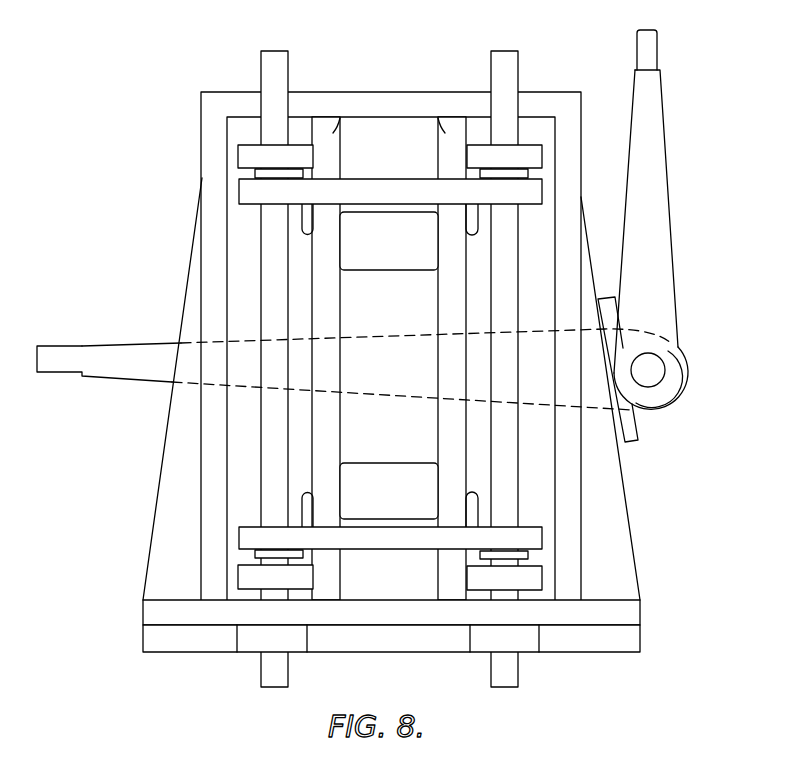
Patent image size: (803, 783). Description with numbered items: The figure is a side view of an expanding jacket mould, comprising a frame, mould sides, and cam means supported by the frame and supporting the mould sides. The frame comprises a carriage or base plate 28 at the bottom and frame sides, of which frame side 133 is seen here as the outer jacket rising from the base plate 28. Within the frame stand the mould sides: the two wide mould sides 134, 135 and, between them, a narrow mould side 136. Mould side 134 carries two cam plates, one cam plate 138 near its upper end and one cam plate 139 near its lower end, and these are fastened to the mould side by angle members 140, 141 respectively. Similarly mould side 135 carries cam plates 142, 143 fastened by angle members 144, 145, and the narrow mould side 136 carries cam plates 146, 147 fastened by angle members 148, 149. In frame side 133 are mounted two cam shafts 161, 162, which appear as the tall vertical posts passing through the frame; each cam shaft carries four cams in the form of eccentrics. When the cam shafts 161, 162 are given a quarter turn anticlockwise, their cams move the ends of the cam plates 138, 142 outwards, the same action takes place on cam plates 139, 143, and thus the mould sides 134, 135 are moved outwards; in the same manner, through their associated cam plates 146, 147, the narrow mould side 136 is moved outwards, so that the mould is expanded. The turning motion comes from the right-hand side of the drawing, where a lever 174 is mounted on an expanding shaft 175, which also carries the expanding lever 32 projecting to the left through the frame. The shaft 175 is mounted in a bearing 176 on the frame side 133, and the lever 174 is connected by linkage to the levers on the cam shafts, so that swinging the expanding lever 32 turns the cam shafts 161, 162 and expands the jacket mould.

The carriage or base plate 28 is at (627, 638).
The expanding lever 32 is at (103, 368).
The frame side 133 is at (416, 103).
The wide mould side 134 is at (325, 127).
The wide mould side 135 is at (457, 130).
The narrow mould side 136 is at (387, 128).
The cam plate 138 is at (308, 158).
The cam plate 139 is at (245, 572).
The angle member 140 is at (256, 180).
The angle member 141 is at (254, 551).
The cam plate 142 is at (476, 157).
The cam plate 143 is at (532, 580).
The angle member 144 is at (515, 180).
The angle member 145 is at (527, 558).
The cam plate 146 is at (420, 190).
The cam plate 147 is at (397, 537).
The angle member 148 is at (395, 243).
The angle member 149 is at (382, 483).
The cam shaft 161 is at (282, 287).
The cam shaft 162 is at (497, 315).
The lever 174 is at (630, 137).
The expanding shaft 175 is at (650, 375).
The bearing 176 is at (622, 435).